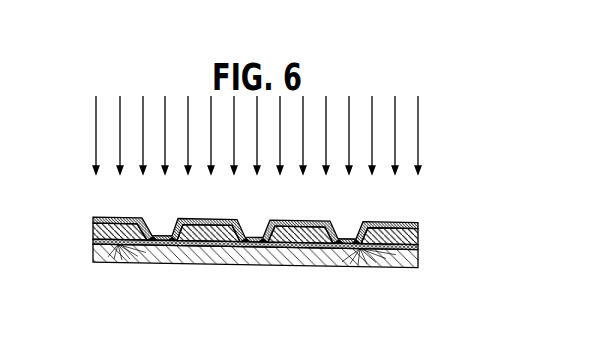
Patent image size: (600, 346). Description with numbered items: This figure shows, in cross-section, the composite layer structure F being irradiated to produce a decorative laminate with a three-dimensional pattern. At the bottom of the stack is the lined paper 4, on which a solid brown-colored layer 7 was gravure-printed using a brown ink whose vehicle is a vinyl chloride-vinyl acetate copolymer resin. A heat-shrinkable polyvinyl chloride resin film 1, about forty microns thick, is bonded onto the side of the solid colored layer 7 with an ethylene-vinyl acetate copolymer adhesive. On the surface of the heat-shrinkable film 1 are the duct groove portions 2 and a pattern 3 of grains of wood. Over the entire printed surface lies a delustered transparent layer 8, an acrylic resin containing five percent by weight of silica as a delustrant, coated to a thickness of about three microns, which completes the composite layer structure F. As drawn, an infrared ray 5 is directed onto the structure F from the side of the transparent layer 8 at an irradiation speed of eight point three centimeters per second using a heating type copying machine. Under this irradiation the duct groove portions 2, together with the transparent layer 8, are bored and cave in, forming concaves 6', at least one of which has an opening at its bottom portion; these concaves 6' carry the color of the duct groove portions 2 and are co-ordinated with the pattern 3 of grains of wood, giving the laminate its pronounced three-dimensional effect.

The heat-shrinkable polyvinyl chloride resin film 1 is at (117, 247).
The duct groove portions 2 is at (163, 241).
The pattern of grains of wood 3 is at (285, 246).
The lined paper 4 is at (372, 258).
The infrared ray 5 is at (372, 140).
The concaves 6' is at (400, 212).
The solid brown-colored layer 7 is at (220, 244).
The delustered transparent layer 8 is at (127, 218).
The composite layer structure F is at (269, 248).